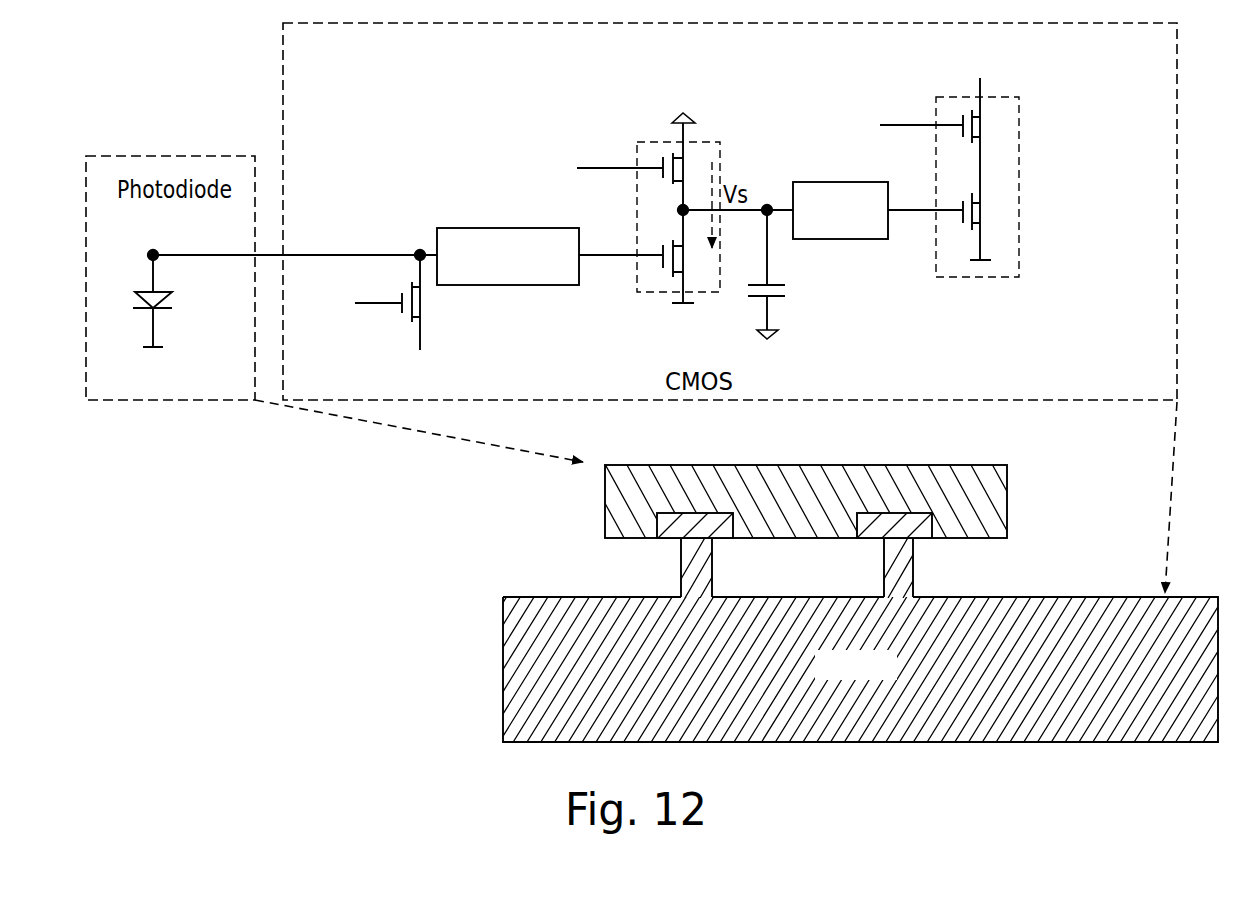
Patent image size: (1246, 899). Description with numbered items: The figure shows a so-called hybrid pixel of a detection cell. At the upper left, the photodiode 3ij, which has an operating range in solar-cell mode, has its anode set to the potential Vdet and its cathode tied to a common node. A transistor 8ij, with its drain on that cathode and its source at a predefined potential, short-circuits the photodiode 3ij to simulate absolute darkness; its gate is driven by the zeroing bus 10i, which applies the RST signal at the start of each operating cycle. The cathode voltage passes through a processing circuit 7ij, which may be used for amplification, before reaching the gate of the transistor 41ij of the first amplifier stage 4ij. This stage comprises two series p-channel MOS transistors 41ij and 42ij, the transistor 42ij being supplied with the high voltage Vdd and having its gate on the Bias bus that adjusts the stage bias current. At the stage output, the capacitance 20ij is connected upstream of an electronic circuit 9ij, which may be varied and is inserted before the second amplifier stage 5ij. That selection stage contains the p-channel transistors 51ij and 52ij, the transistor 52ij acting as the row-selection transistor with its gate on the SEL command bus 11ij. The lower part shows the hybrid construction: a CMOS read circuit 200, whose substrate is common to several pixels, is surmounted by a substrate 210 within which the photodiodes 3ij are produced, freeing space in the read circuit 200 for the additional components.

The photodiode 3ij is at (170, 320).
The processing circuit 7ij is at (467, 240).
The first amplifier stage 4ij is at (608, 209).
The transistor 42ij is at (662, 138).
The transistor 41ij is at (660, 262).
The electronic circuit 9ij is at (815, 183).
The SEL command bus 11ij is at (932, 120).
The transistor 52ij is at (992, 123).
The transistor 51ij is at (992, 211).
The second amplifier stage 5ij is at (1008, 206).
The capacitance 20ij is at (790, 304).
The zeroing bus 10i is at (378, 308).
The transistor 8ij is at (406, 322).
The substrate 210 is at (605, 478).
The CMOS read circuit 200 is at (503, 662).